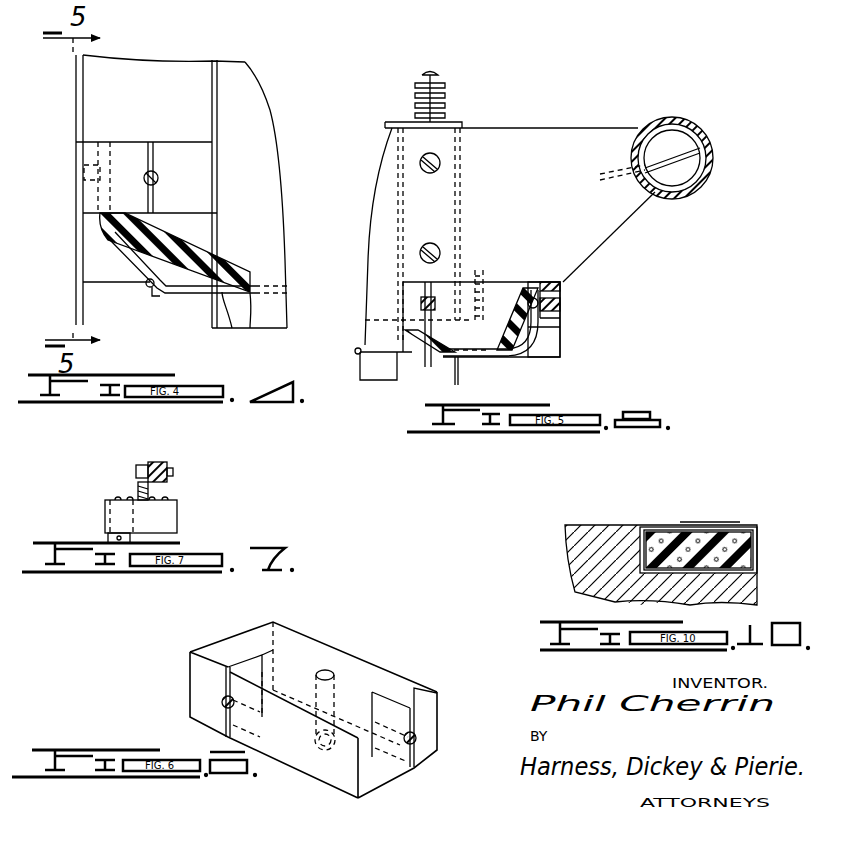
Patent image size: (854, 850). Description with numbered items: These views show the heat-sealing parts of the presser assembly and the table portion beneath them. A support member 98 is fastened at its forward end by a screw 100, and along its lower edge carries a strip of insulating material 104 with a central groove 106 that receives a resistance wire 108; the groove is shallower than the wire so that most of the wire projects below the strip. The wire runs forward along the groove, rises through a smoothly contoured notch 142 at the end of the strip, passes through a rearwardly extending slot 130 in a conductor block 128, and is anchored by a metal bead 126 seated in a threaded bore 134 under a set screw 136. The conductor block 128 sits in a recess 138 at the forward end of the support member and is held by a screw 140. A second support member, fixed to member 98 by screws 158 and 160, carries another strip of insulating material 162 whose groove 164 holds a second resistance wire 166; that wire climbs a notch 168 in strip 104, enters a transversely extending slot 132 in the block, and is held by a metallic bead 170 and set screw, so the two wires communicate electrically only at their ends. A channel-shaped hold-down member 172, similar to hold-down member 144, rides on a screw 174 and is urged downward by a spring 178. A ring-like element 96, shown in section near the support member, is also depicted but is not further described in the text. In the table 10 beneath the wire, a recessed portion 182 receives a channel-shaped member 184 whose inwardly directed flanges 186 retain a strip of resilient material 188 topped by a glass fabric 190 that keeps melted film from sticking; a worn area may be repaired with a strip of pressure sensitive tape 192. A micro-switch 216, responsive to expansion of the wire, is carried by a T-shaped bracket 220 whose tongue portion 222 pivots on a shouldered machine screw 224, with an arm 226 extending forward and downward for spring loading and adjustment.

In FIG. 10, the table 10 is at (600, 524).
In FIG. 5, the tubular guide rod 96 is at (690, 121).
In FIG. 4, the support member 98 is at (158, 66).
In FIG. 5, the support member 98 is at (565, 130).
In FIG. 5, the screw 100 is at (710, 150).
In FIG. 4, the strip of insulating material 104 is at (125, 233).
In FIG. 5, the strip of insulating material 104 is at (372, 334).
In FIG. 4, the groove 106 is at (147, 288).
In FIG. 5, the groove 106 is at (356, 363).
In FIG. 4, the resistance wire 108 is at (153, 296).
In FIG. 5, the resistance wire 108 is at (522, 358).
In FIG. 5, the metal bead 126 is at (538, 302).
In FIG. 4, the conductor block 128 is at (178, 148).
In FIG. 6, the conductor block 128 is at (352, 640).
In FIG. 5, the rearwardly extending slot 130 is at (560, 321).
In FIG. 6, the rearwardly extending slot 130 is at (401, 695).
In FIG. 6, the transversely extending slot 132 is at (252, 660).
In FIG. 6, the threaded bore 134 is at (220, 712).
In FIG. 4, the set screw 136 is at (82, 172).
In FIG. 5, the set screw 136 is at (405, 299).
In FIG. 5, the recess 138 is at (497, 292).
In FIG. 5, the screw 140 is at (497, 268).
In FIG. 5, the notch 142 is at (560, 342).
In FIG. 4, the hold-down member 144 is at (78, 97).
In FIG. 5, the hold-down member 144 is at (372, 376).
In FIG. 5, the screw 158 is at (442, 166).
In FIG. 5, the screw 160 is at (450, 234).
In FIG. 4, the strip of insulating material 162 is at (235, 270).
In FIG. 4, the groove 164 is at (231, 332).
In FIG. 4, the resistance wire 166 is at (120, 245).
In FIG. 5, the resistance wire 166 is at (428, 369).
In FIG. 4, the notch 168 is at (95, 265).
In FIG. 4, the metallic bead 170 is at (100, 170).
In FIG. 4, the hold-down member 172 is at (245, 92).
In FIG. 5, the hold-down member 172 is at (461, 376).
In FIG. 5, the screw 174 is at (438, 73).
In FIG. 5, the spring 178 is at (447, 101).
In FIG. 10, the recessed portion 182 is at (643, 560).
In FIG. 10, the channel-shaped member 184 is at (758, 548).
In FIG. 10, the flanges 186 is at (652, 524).
In FIG. 10, the strip of resilient material 188 is at (760, 560).
In FIG. 10, the fabric 190 is at (690, 526).
In FIG. 10, the strip of pressure sensitive tape 192 is at (745, 524).
In FIG. 7, the micro-switch 216 is at (165, 519).
In FIG. 7, the T-shaped bracket 220 is at (126, 498).
In FIG. 7, the tongue portion 222 is at (140, 468).
In FIG. 7, the shouldered machine screw 224 is at (176, 462).
In FIG. 7, the arm 226 is at (110, 538).